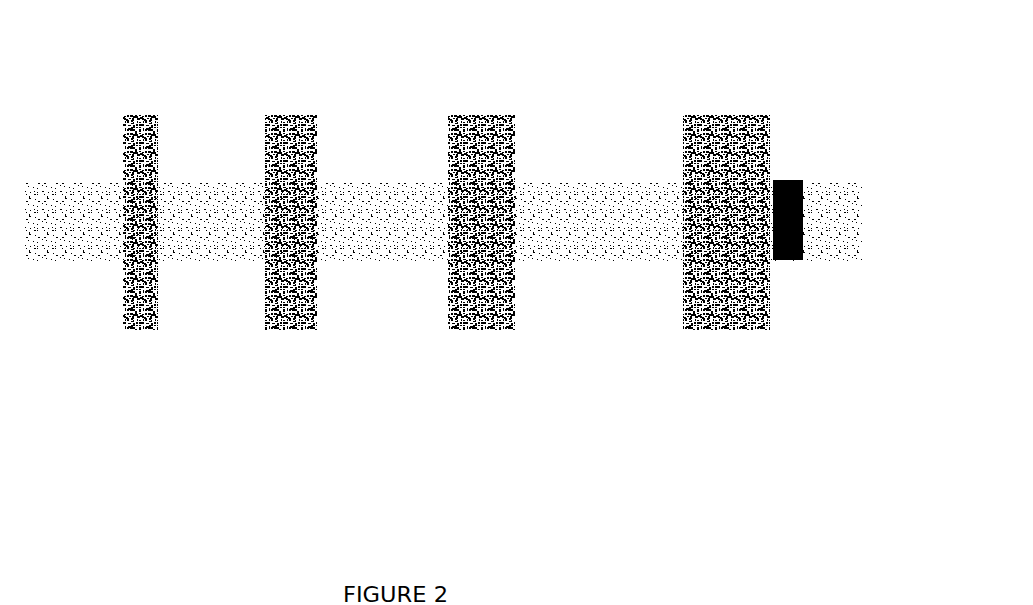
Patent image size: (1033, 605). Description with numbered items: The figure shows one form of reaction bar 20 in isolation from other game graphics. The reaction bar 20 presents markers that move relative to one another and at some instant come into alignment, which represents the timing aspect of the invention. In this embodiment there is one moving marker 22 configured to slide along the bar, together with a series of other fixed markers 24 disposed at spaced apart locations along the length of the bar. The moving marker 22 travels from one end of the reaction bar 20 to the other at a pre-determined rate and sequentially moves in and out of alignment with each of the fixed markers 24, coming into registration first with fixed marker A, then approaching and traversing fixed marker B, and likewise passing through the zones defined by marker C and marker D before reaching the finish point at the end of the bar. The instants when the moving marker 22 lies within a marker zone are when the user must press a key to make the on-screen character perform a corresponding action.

The reaction bar 20 is at (475, 228).
The marker 22 is at (812, 164).
The markers 24 is at (450, 247).
The fixed marker A is at (748, 104).
The fixed marker B is at (503, 97).
The marker C is at (322, 100).
The marker D is at (156, 96).